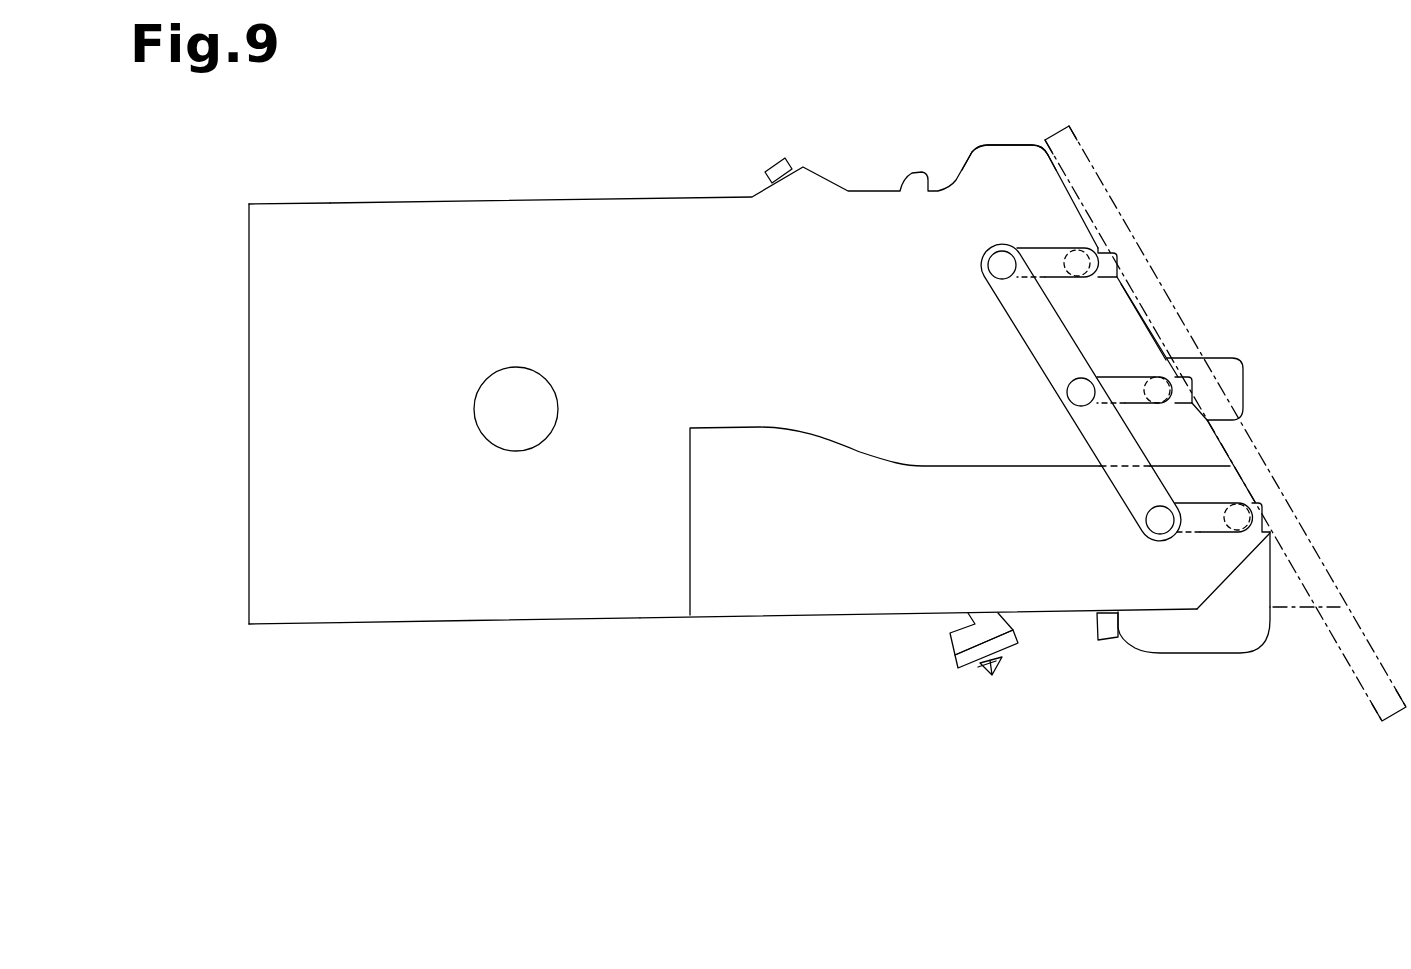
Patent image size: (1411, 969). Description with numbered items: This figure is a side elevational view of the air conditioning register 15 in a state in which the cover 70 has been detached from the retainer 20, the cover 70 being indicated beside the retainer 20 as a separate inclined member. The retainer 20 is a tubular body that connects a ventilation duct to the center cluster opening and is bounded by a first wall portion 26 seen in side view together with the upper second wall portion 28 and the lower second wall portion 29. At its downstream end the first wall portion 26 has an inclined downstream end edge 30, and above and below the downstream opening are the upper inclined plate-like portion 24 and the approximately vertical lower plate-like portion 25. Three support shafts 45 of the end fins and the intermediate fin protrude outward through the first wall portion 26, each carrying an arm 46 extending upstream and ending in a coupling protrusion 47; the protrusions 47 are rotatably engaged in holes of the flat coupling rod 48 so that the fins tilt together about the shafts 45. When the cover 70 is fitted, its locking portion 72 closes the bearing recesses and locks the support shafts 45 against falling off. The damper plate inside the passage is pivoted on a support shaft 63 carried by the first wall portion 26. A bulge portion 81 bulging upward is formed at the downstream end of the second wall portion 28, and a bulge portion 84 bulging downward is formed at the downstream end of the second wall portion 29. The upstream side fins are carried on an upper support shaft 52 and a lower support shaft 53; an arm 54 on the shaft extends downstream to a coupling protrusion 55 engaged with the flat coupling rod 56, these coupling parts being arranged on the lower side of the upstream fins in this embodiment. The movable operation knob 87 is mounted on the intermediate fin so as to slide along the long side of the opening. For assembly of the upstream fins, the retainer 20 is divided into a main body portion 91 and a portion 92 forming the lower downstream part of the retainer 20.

The air conditioning register 15 is at (395, 180).
The retainer 20 is at (413, 622).
The plate-like portion 24 is at (1097, 193).
The plate-like portion 25 is at (1273, 618).
The first wall portion 26 is at (258, 470).
The second wall portion 28 is at (283, 200).
The second wall portion 29 is at (285, 627).
The downstream end edge 30 is at (1240, 445).
The support shaft 45 is at (1080, 245).
The arm 46 is at (1037, 257).
The coupling protrusion 47 is at (988, 265).
The coupling rod 48 is at (1040, 340).
The support shaft 52 is at (775, 168).
The support shaft 53 is at (985, 622).
The arm 54 is at (955, 648).
The coupling protrusion 55 is at (988, 672).
The coupling rod 56 is at (958, 668).
The support shaft 63 is at (535, 390).
The cover 70 is at (1130, 218).
The locking portion 72 is at (1135, 298).
The bulge portion 81 is at (1008, 162).
The bulge portion 84 is at (1197, 640).
The movable operation knob 87 is at (1240, 385).
The main body portion 91 is at (522, 602).
The portion 92 is at (765, 598).